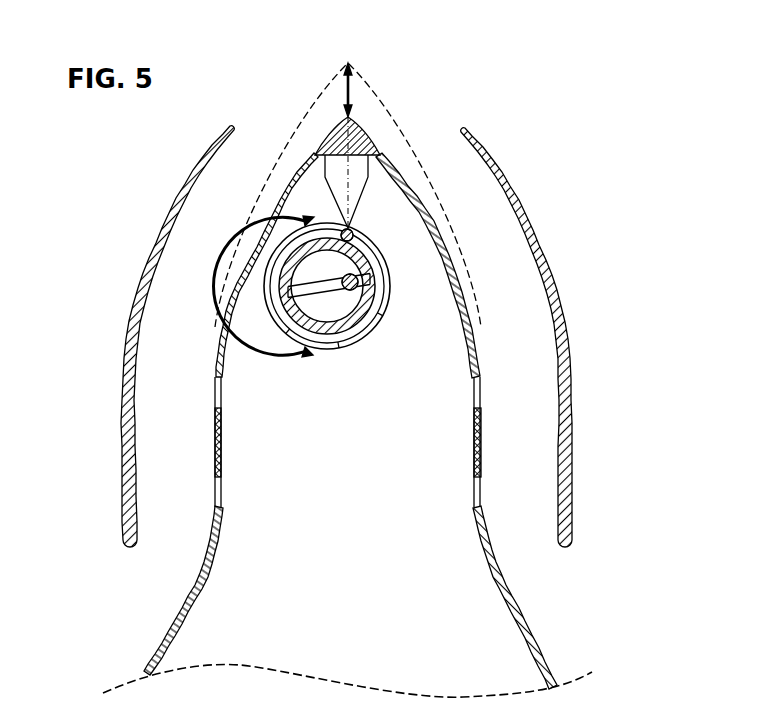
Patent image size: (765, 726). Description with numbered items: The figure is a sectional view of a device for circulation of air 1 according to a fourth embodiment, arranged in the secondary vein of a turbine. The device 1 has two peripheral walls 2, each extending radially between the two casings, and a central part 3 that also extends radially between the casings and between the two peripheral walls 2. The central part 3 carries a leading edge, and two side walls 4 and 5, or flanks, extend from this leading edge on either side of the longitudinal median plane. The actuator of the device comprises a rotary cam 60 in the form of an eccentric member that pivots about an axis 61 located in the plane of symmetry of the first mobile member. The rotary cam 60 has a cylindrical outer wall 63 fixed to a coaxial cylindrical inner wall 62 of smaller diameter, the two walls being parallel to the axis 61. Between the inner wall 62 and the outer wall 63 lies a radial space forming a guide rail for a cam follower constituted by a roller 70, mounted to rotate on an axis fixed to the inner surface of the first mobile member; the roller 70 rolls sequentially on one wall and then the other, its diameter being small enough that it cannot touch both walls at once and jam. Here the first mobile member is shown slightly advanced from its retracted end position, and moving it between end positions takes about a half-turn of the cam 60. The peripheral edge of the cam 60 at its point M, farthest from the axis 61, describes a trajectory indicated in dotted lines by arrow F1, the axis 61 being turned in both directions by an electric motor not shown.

The device for circulation of air 1 is at (577, 182).
The peripheral walls 2 is at (148, 256).
The central part 3 is at (383, 144).
The side wall 4 is at (222, 440).
The side wall 5 is at (472, 438).
The rotary cam 60 is at (390, 340).
The axis 61 is at (364, 296).
The cylindrical inner wall 62 is at (354, 284).
The cylindrical outer wall 63 is at (280, 243).
The roller 70 is at (350, 236).
The point M is at (260, 300).
The arrow F1 is at (258, 323).